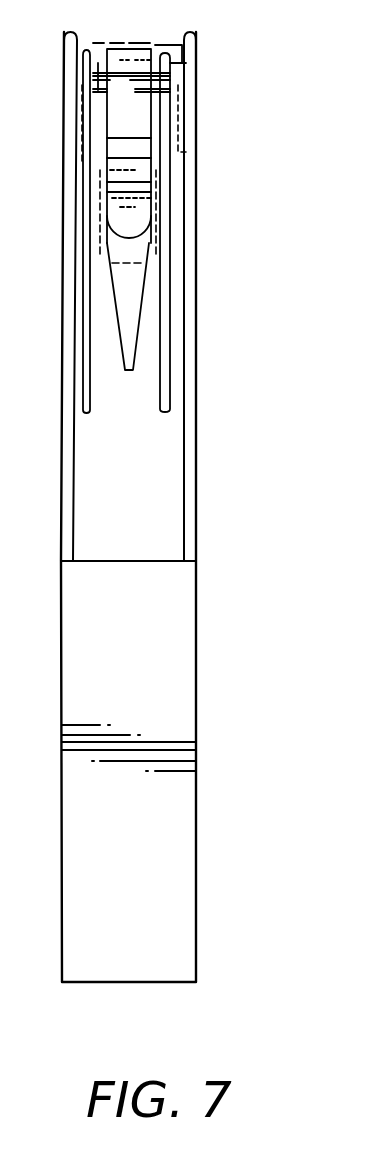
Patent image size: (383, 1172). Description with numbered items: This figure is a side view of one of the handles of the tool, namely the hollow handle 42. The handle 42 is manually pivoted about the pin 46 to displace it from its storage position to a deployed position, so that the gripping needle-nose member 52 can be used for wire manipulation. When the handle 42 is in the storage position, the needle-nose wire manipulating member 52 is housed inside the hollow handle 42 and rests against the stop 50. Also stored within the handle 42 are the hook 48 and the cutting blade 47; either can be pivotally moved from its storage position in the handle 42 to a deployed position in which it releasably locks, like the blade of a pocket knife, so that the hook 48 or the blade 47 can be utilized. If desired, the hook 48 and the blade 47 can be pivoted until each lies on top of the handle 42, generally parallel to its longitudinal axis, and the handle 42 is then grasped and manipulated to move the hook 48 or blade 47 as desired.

The hollow handle 42 is at (201, 753).
The pin 46 is at (100, 62).
The cutting blade 47 is at (84, 370).
The hook 48 is at (172, 310).
The stop 50 is at (100, 258).
The gripping needle-nose member 52 is at (130, 372).